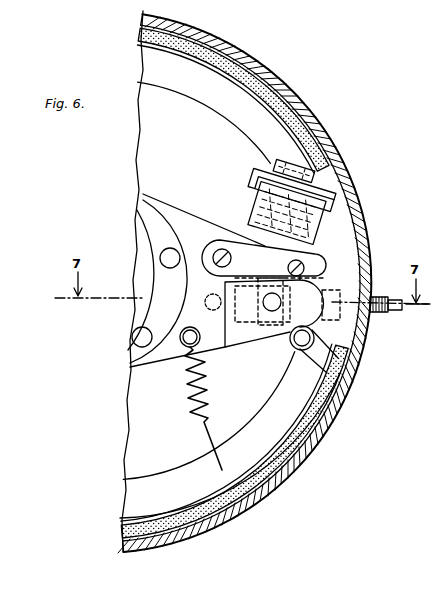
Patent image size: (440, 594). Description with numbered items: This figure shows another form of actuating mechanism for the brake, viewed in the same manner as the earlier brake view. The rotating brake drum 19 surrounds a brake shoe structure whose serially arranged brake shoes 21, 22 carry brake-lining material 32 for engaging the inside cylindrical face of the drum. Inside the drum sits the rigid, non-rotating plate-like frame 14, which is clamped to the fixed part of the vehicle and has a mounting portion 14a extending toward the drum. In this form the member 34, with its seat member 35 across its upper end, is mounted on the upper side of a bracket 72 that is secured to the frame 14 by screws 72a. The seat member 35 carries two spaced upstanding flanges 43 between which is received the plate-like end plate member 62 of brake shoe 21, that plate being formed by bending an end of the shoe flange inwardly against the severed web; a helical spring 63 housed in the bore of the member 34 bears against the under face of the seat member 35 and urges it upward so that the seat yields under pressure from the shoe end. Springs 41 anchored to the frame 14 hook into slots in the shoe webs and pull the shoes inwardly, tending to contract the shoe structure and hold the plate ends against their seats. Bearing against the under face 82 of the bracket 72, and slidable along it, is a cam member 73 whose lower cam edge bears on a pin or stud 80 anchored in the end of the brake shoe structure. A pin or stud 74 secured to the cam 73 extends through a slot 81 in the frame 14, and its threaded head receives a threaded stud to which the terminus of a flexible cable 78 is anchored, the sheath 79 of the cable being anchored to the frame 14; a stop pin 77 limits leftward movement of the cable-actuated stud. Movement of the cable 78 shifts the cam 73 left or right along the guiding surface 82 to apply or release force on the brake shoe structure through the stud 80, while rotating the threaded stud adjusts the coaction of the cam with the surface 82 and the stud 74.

The frame 14 is at (177, 195).
The mounting portion 14a is at (323, 260).
The brake drum 19 is at (330, 418).
The brake shoe 21 is at (221, 112).
The brake shoe 22 is at (265, 394).
The brake-lining material 32 is at (229, 58).
The member 34 is at (340, 219).
The seat member 35 is at (341, 188).
The spring 41 is at (188, 386).
The upstanding flange 43 is at (292, 177).
The end plate member 62 is at (323, 182).
The helical spring 63 is at (256, 207).
The bracket 72 is at (227, 232).
The screw 72a is at (290, 269).
The cam member 73 is at (233, 350).
The pin or stud 74 is at (272, 311).
The stop pin 77 is at (209, 311).
The flexible cable 78 is at (407, 315).
The sheath 79 is at (372, 301).
The pin or stud 80 is at (300, 351).
The slot 81 is at (227, 333).
The under face 82 is at (223, 298).